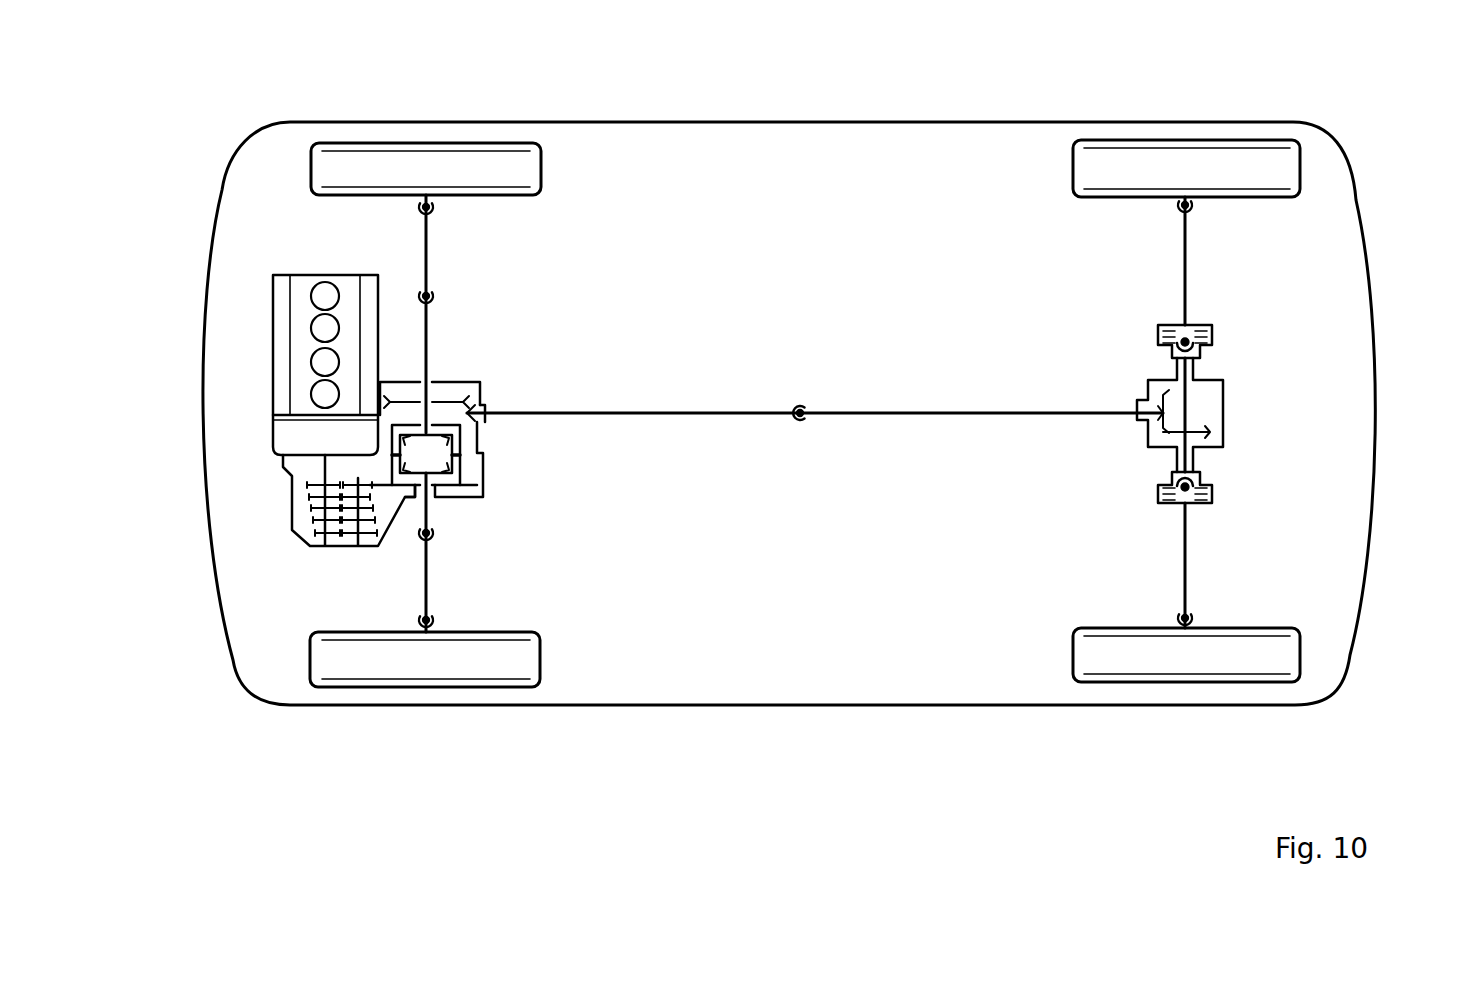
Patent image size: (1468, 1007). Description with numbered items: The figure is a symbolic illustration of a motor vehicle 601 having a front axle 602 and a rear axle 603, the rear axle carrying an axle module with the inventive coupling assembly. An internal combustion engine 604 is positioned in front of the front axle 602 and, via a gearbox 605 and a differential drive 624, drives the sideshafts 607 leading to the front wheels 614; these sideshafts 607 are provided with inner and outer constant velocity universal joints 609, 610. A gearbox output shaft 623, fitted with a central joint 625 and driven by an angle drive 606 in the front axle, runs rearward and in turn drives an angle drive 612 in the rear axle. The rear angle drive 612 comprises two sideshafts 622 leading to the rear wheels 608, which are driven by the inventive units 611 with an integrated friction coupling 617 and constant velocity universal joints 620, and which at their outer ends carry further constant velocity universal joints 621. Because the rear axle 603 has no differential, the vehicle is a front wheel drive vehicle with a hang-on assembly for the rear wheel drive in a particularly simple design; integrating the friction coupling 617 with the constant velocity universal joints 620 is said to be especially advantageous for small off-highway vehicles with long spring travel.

The motor vehicle 601 is at (727, 120).
The front axle 602 is at (405, 237).
The rear axle 603 is at (1202, 247).
The engine 604 is at (280, 358).
The gearbox 605 is at (290, 503).
The angle drive 606 is at (470, 420).
The sideshafts 607 is at (420, 580).
The rear wheels 608 is at (1277, 655).
The inner constant velocity universal joint 609 is at (419, 538).
The outer constant velocity universal joint 610 is at (418, 622).
The inventive units 611 is at (1228, 465).
The angle drive 612 is at (1223, 403).
The front wheels 614 is at (330, 660).
The friction coupling 617 is at (1214, 487).
The constant velocity universal joints 620 is at (1187, 492).
The universal joint 621 is at (1190, 615).
The sideshafts 622 is at (1185, 562).
The gearbox output shaft 623 is at (898, 410).
The differential drive 624 is at (460, 468).
The central joint 625 is at (793, 408).